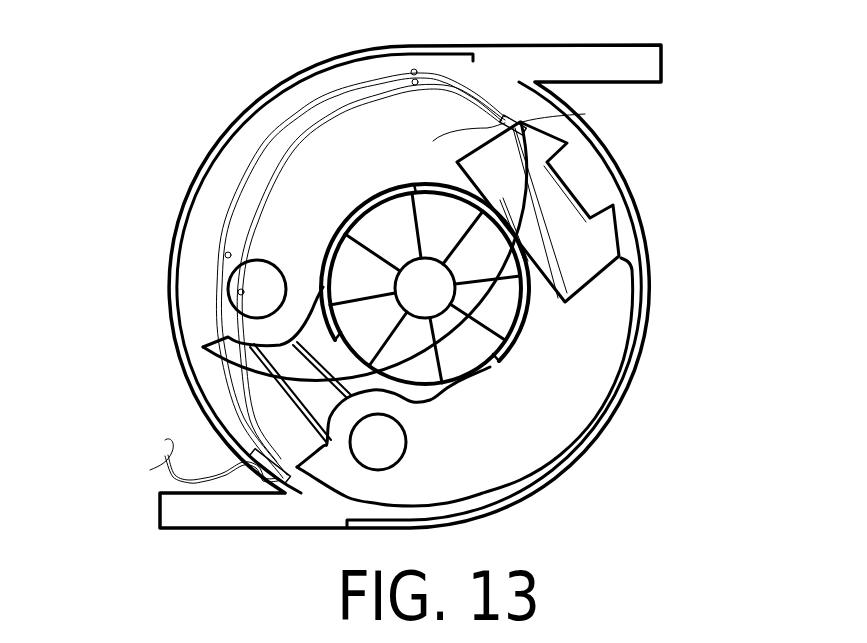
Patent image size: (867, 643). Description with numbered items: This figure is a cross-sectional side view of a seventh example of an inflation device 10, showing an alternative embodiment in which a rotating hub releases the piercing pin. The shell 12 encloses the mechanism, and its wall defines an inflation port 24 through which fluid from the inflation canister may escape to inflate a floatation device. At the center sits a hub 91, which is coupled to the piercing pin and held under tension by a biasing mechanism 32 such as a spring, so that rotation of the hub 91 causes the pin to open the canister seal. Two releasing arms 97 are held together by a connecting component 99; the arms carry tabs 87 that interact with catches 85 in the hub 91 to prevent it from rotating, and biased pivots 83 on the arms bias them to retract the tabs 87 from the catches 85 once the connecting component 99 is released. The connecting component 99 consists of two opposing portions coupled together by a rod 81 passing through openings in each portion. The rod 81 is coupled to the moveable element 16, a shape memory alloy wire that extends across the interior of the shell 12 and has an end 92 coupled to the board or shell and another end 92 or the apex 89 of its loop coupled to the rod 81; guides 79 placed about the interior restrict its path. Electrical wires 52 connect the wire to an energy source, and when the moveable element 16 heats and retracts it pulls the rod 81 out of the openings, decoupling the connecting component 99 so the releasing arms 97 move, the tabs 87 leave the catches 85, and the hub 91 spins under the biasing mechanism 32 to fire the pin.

The inflation device 10 is at (702, 146).
The shell 12 is at (210, 155).
The moveable element 16 is at (275, 147).
The inflation port 24 is at (677, 60).
The biasing mechanism 32 is at (268, 384).
The electrical wires 52 is at (183, 443).
The guides 79 is at (413, 80).
The rod 81 is at (462, 132).
The biased pivots 83 is at (270, 301).
The catches 85 is at (376, 256).
The tabs 87 is at (372, 218).
The apex 89 is at (578, 117).
The hub 91 is at (438, 301).
The end 92 is at (272, 482).
The releasing arms 97 is at (378, 165).
The connecting component 99 is at (596, 248).